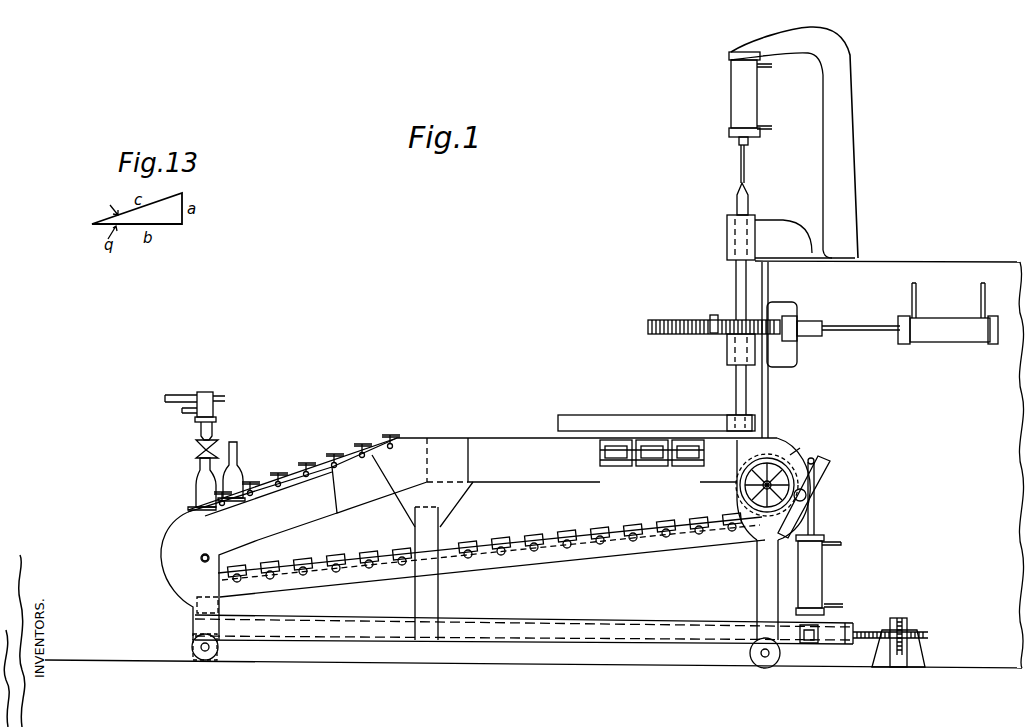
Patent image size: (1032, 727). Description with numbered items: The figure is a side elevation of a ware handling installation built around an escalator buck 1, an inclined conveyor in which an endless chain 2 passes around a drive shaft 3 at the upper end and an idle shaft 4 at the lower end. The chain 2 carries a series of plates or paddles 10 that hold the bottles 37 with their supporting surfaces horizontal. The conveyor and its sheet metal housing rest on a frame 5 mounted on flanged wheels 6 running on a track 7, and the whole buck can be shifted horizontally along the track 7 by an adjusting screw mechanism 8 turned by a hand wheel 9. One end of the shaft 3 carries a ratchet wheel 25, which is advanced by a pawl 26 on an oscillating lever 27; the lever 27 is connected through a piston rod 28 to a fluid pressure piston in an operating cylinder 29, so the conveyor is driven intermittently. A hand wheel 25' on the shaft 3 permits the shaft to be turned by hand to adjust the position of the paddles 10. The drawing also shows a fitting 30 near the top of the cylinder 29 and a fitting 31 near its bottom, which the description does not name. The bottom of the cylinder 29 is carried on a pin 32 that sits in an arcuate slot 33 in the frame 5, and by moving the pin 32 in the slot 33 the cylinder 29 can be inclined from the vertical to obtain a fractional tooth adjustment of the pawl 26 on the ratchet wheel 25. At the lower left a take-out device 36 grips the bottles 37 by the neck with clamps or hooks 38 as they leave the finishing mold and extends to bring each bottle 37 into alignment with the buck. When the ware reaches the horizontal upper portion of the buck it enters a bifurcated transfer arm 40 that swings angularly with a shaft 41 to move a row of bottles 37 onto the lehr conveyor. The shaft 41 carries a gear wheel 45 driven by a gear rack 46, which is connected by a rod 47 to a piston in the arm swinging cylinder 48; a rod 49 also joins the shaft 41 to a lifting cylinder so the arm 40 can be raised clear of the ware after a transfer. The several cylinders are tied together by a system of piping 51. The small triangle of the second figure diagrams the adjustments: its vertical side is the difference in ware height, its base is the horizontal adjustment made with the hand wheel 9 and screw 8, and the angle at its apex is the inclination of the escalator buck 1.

The escalator buck 1 is at (493, 450).
The endless chain 2 is at (552, 536).
The drive shaft 3 is at (796, 452).
The idle shaft 4 is at (200, 560).
The frame 5 is at (585, 630).
The flanged wheels 6 is at (212, 660).
The track 7 is at (540, 668).
The adjusting screw mechanism 8 is at (870, 632).
The hand wheel 9 is at (903, 623).
The paddles 10 is at (375, 446).
The ratchet wheel 25 is at (775, 459).
The hand wheel 25' is at (737, 485).
The pawl 26 is at (806, 493).
The oscillating lever 27 is at (792, 463).
The piston rod 28 is at (815, 525).
The operating cylinder 29 is at (823, 569).
The handle 30 is at (834, 546).
The pin 31 is at (831, 606).
The pin 32 is at (808, 648).
The arcuate slot 33 is at (800, 645).
The take-out device 36 is at (210, 392).
The bottles 37 is at (198, 486).
The clamps or hooks 38 is at (197, 448).
The transfer arm 40 is at (590, 415).
The shaft 41 is at (735, 391).
The gear wheel 45 is at (712, 330).
The gear rack 46 is at (672, 318).
The rod 47 is at (858, 330).
The arm swinging cylinder 48 is at (938, 340).
The rod 49 is at (737, 163).
The piping system 51 is at (745, 100).